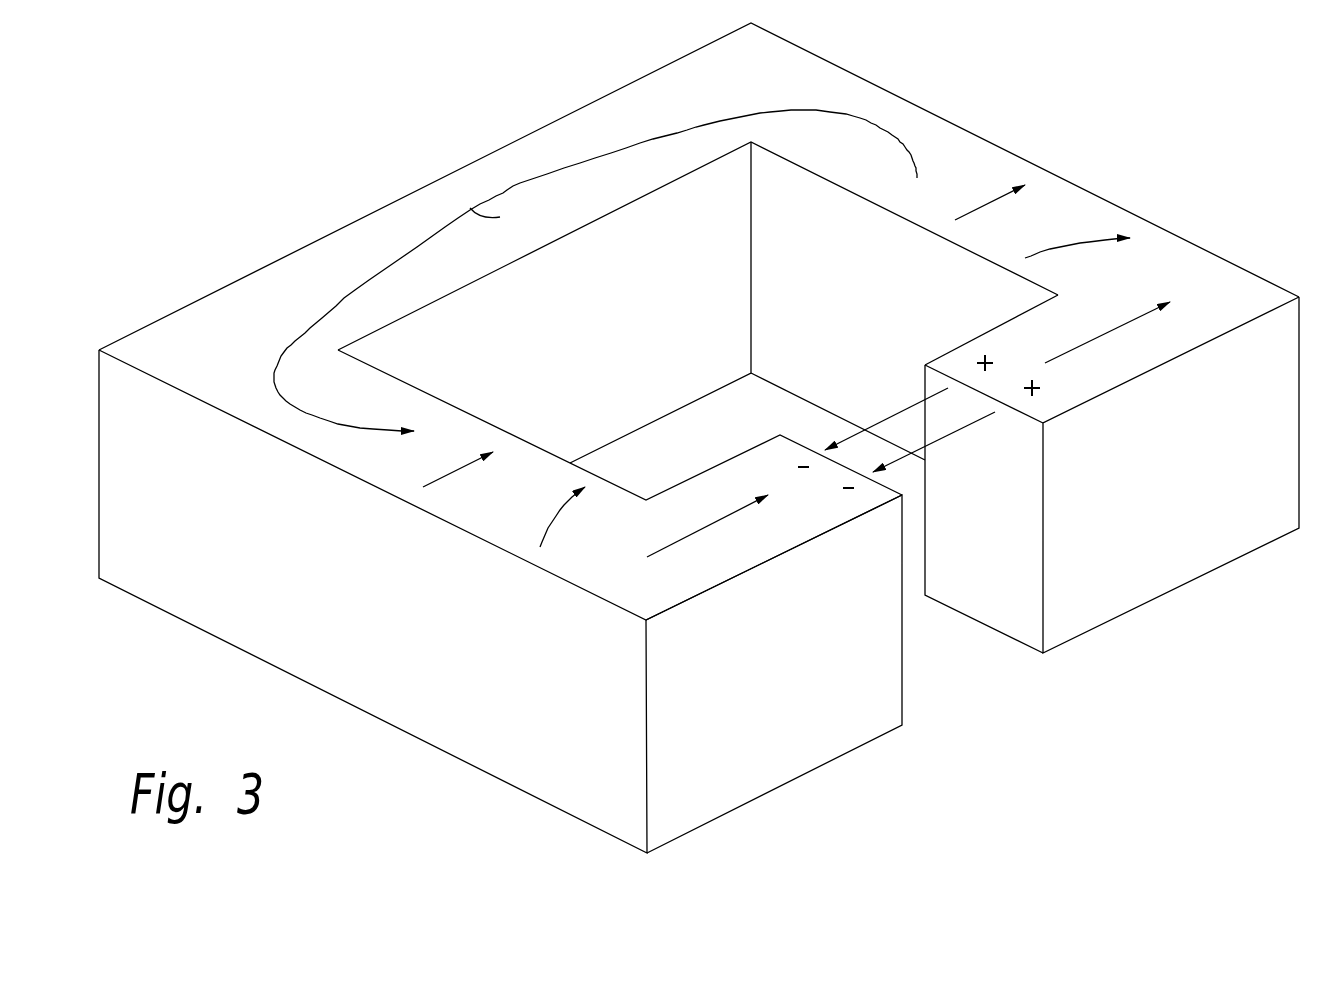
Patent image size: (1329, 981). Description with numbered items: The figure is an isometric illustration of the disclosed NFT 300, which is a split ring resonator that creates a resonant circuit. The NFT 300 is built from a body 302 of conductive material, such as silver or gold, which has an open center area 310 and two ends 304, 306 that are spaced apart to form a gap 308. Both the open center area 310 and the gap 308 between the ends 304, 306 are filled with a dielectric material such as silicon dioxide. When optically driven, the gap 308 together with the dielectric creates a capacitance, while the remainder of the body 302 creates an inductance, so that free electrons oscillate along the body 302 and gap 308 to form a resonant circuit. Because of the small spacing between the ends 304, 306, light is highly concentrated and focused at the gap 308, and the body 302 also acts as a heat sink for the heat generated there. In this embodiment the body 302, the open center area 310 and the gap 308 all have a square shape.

The NFT 300 is at (448, 124).
The body 302 is at (1063, 186).
The end 304 is at (902, 690).
The end 306 is at (1015, 635).
The gap 308 is at (980, 667).
The open center area 310 is at (718, 449).